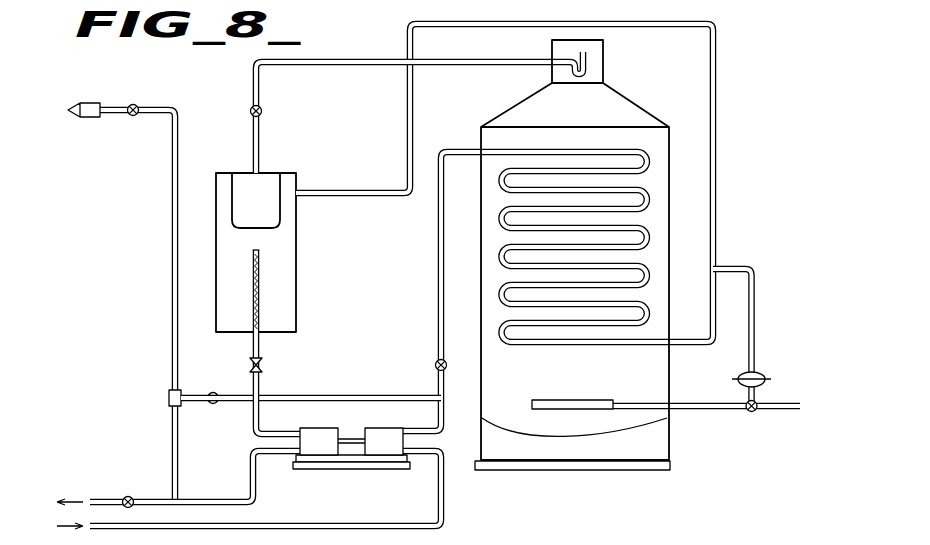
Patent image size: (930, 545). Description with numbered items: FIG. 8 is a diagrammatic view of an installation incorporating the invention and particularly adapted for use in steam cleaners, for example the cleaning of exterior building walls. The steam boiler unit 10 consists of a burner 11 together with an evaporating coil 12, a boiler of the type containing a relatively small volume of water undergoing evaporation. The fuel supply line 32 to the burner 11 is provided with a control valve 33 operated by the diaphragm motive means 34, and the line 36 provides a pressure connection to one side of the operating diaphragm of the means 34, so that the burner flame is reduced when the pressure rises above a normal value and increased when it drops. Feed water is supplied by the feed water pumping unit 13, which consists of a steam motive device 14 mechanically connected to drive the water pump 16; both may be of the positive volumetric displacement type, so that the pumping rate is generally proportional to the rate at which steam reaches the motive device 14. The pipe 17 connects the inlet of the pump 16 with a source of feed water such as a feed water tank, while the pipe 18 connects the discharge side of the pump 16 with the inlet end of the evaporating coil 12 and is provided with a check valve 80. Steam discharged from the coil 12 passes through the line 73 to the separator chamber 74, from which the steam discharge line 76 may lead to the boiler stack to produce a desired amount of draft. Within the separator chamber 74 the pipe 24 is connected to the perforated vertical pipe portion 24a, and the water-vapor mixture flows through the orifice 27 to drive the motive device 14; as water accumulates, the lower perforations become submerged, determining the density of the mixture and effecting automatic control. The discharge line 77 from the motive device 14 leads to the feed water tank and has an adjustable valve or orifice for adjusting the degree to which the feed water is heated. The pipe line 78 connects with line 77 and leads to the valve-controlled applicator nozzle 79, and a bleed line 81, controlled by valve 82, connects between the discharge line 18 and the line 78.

The steam boiler unit 10 is at (520, 104).
The burner 11 is at (610, 400).
The evaporating coil 12 is at (545, 325).
The feed water pumping unit 13 is at (359, 475).
The steam motive device 14 is at (330, 428).
The water pump 16 is at (402, 428).
The pipe 17 is at (444, 494).
The pipe 18 is at (440, 297).
The pipe 24 is at (262, 349).
The perforated vertical pipe portion 24a is at (261, 297).
The orifice 27 is at (263, 366).
The fuel supply line 32 is at (693, 411).
The control valve 33 is at (752, 412).
The diaphragm motive means 34 is at (763, 369).
The line 36 is at (755, 312).
The line 73 is at (384, 194).
The separator chamber 74 is at (297, 243).
The steam discharge line 76 is at (362, 67).
The discharge line 77 is at (250, 479).
The pipe line 78 is at (170, 319).
The applicator nozzle 79 is at (96, 117).
The check valve 80 is at (436, 366).
The bleed line 81 is at (356, 380).
The valve 82 is at (214, 405).